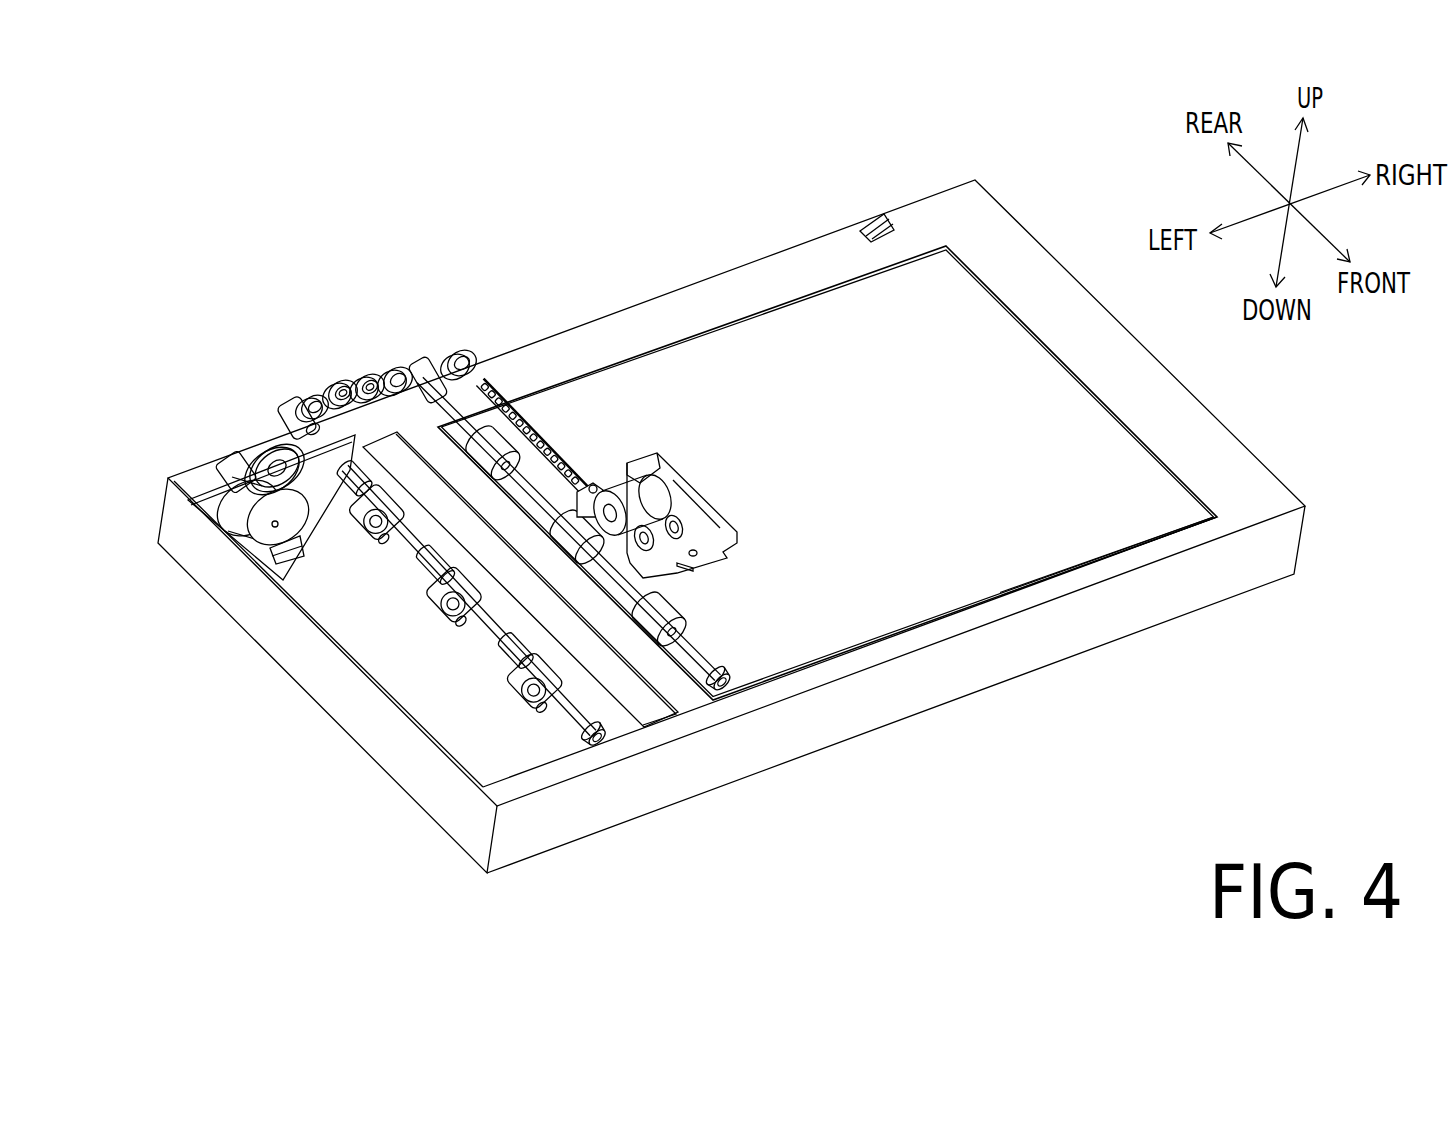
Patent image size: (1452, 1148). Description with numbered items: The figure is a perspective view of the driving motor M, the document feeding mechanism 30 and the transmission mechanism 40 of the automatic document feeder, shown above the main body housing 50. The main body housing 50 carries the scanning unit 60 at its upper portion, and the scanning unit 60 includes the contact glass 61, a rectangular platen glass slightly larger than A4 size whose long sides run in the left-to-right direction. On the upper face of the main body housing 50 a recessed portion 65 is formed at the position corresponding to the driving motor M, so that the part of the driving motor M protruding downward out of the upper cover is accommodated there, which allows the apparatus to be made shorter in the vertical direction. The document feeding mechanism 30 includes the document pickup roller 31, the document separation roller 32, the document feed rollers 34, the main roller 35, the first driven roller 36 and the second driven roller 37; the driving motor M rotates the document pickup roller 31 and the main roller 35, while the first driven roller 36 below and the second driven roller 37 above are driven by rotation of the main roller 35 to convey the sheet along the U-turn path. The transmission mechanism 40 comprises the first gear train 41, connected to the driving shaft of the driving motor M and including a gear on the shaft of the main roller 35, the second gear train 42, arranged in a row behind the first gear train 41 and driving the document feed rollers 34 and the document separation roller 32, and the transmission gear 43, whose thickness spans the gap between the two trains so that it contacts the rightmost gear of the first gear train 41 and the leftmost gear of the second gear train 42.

The document feeding mechanism 30 is at (557, 428).
The document pickup roller 31 is at (685, 488).
The document separation roller 32 is at (613, 513).
The document feed rollers 34 is at (708, 668).
The main roller 35 is at (422, 583).
The first driven roller 36 is at (512, 716).
The second driven roller 37 is at (521, 648).
The transmission mechanism 40 is at (351, 341).
The first gear train 41 is at (266, 460).
The second gear train 42 is at (370, 384).
The transmission gear 43 is at (293, 406).
The main body housing 50 is at (1243, 487).
The scanning unit 60 is at (800, 335).
The contact glass 61 is at (1121, 548).
The recessed portion 65 is at (285, 576).
The driving motor M is at (248, 502).